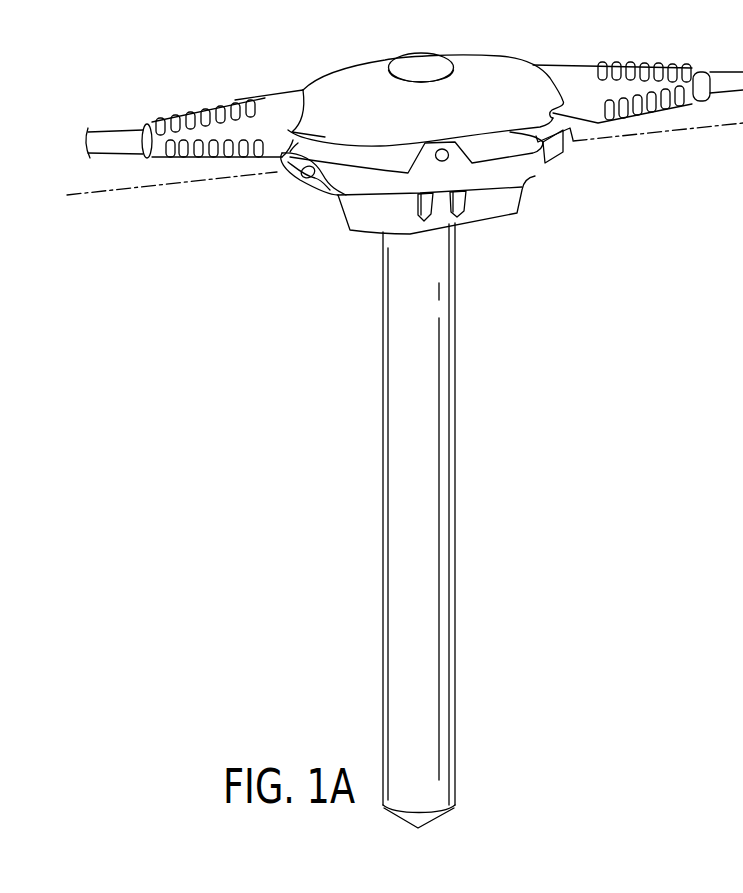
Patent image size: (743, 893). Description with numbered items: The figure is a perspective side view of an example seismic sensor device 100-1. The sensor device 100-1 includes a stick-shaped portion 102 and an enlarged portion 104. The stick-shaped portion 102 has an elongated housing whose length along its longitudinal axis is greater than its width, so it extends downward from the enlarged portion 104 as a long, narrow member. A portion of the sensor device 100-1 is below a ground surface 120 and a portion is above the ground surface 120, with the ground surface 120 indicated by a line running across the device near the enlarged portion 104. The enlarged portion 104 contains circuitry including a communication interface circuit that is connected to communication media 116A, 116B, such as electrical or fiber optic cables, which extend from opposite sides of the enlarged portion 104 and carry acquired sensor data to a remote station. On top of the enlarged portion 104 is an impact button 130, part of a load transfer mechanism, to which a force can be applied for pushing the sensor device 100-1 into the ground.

The seismic sensor device 100-1 is at (486, 34).
The stick-shaped portion 102 is at (457, 527).
The enlarged portion 104 is at (527, 197).
The communication medium 116A is at (117, 131).
The communication medium 116B is at (731, 65).
The ground surface 120 is at (175, 184).
The impact button 130 is at (422, 62).